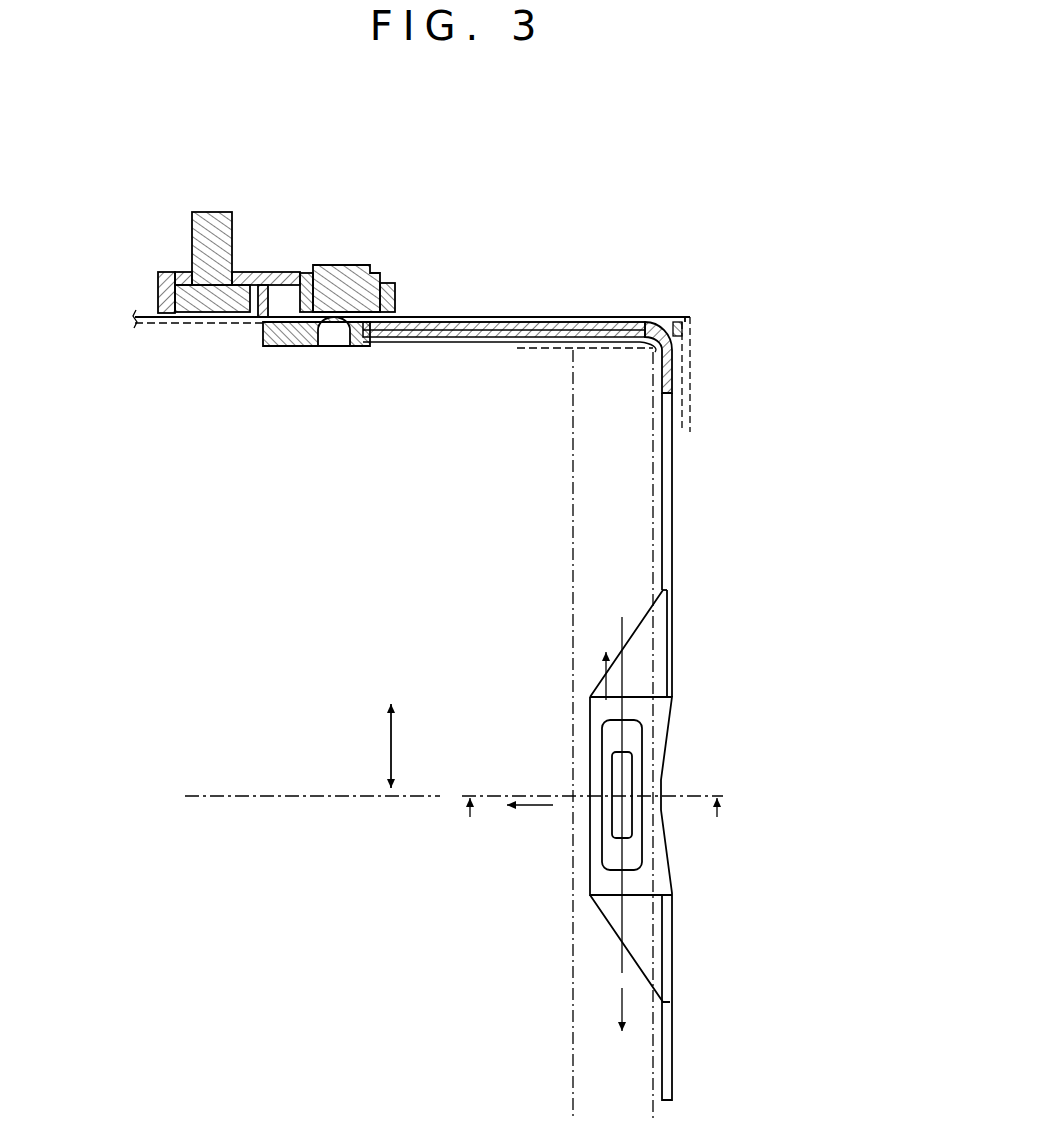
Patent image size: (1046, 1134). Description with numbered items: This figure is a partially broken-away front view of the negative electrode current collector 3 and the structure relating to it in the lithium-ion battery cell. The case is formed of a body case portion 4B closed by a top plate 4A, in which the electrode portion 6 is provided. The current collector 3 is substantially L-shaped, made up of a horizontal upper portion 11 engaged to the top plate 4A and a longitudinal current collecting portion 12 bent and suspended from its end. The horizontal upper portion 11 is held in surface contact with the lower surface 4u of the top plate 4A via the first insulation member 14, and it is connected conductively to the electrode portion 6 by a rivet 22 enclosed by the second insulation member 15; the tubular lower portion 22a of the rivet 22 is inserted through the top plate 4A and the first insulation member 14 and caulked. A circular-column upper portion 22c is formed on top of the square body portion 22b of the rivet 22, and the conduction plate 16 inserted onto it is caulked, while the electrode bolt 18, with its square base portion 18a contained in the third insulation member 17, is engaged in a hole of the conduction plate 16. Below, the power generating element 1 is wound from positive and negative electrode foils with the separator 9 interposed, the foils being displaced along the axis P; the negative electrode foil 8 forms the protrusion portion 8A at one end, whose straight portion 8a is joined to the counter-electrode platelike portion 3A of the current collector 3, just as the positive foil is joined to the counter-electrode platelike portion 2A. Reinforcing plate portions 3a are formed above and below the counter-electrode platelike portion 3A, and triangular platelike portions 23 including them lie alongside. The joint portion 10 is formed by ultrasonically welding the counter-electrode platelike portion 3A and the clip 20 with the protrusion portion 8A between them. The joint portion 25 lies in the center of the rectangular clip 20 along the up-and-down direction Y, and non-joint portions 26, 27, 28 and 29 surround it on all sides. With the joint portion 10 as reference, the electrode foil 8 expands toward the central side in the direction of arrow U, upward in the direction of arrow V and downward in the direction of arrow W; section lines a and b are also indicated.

The power generating element 1 is at (530, 348).
The current collector 3 is at (678, 372).
The reinforcing plate portion 3a is at (637, 632).
The counter-electrode platelike portion 3A is at (600, 697).
The counter-electrode platelike portion 2A is at (505, 662).
The top plate 4A is at (460, 317).
The body case portion 4B is at (690, 388).
The lower surface 4u is at (410, 326).
The electrode portion 6 is at (236, 228).
The negative electrode foil 8 is at (637, 480).
The straight portion 8a is at (645, 668).
The protrusion portion 8A is at (637, 1042).
The separator 9 is at (574, 1052).
The joint portion 10 is at (657, 777).
The horizontal upper portion 11 is at (478, 338).
The longitudinal current collecting portion 12 is at (674, 541).
The first insulation member 14 is at (690, 332).
The second insulation member 15 is at (390, 300).
The conduction plate 16 is at (272, 285).
The third insulation member 17 is at (163, 290).
The electrode bolt 18 is at (198, 242).
The square base portion 18a is at (200, 314).
The clip 20 is at (645, 745).
The rivet 22 is at (338, 290).
The tubular lower portion 22a is at (312, 347).
The square body portion 22b is at (373, 290).
The circular-column upper portion 22c is at (326, 265).
The triangular platelike portion 23 is at (674, 628).
The joint portion 25 is at (618, 818).
The non-joint portion 26 is at (604, 767).
The non-joint portion 27 is at (640, 818).
The non-joint portion 28 is at (627, 735).
The non-joint portion 29 is at (615, 860).
The section line a is at (619, 627).
The section line b is at (593, 815).
The axis P is at (232, 796).
The direction of arrow U is at (527, 805).
The direction of arrow V is at (600, 667).
The direction of arrow W is at (628, 1012).
The up-and-down direction Y is at (391, 745).